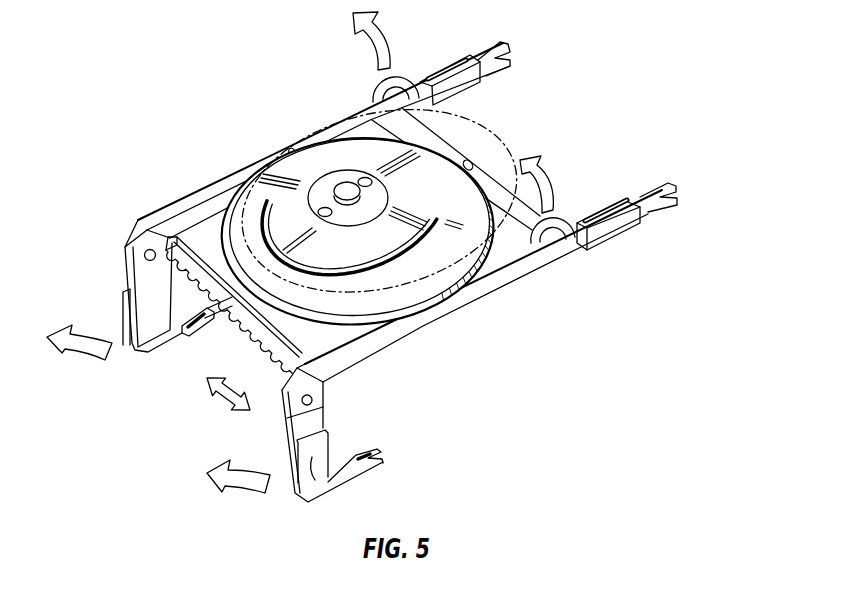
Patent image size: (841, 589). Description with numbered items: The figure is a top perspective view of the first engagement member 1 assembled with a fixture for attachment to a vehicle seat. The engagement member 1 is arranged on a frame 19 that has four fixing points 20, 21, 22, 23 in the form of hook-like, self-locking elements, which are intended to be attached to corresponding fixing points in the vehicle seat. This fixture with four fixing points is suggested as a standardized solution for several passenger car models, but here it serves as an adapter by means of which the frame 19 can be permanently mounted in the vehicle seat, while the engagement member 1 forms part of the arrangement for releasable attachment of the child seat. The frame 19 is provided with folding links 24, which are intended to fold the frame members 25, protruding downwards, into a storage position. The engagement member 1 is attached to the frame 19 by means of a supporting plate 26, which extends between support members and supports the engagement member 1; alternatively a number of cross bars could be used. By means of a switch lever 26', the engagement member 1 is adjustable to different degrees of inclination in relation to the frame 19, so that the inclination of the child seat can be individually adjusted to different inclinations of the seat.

The engagement member 1 is at (246, 150).
The frame 19 is at (112, 313).
The fixing point 20 is at (212, 318).
The fixing point 21 is at (381, 468).
The fixing point 22 is at (510, 63).
The fixing point 23 is at (669, 207).
The folding link 24 is at (143, 252).
The frame member 25 is at (148, 297).
The supporting plate 26 is at (335, 419).
The switch lever 26' is at (186, 340).